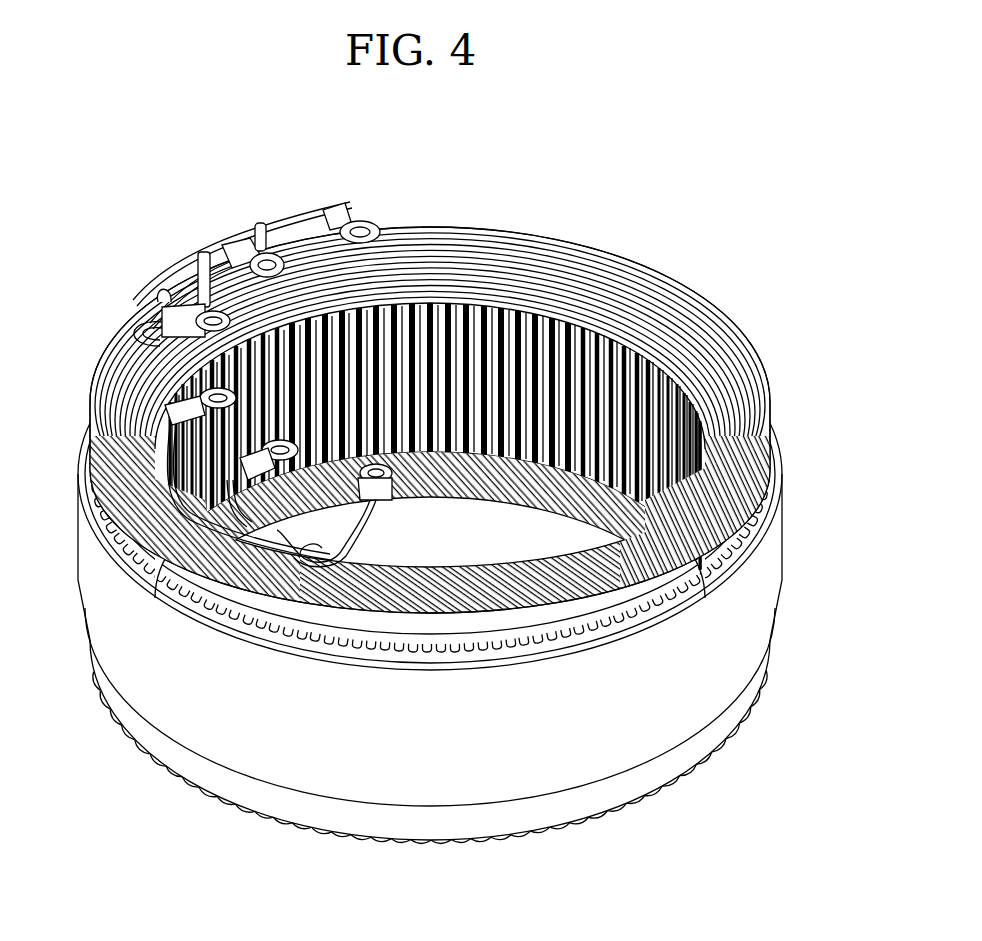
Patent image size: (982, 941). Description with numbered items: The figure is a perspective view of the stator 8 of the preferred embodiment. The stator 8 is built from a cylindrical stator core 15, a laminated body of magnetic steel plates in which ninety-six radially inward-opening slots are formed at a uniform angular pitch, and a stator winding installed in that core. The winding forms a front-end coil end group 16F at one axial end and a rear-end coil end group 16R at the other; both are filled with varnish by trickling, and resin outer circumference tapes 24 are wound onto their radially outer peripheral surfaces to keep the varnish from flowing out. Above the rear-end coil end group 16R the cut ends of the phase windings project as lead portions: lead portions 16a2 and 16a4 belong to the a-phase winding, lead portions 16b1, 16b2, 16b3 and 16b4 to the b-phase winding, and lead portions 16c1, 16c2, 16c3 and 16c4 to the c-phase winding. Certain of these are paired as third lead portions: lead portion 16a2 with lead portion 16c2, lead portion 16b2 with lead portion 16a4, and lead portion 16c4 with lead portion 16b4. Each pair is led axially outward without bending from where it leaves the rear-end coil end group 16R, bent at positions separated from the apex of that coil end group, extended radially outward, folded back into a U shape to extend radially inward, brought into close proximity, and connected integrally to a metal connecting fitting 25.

The stator 8 is at (110, 134).
The stator core 15 is at (770, 552).
The rear-end coil end group 16R is at (753, 367).
The front-end coil end group 16F is at (713, 747).
The resin outer circumference tape 24 is at (753, 458).
The metal connecting fitting 25 is at (365, 210).
The lead portion 16a2 is at (132, 343).
The lead portion 16a4 is at (220, 244).
The lead portion 16b1 is at (238, 242).
The lead portion 16b2 is at (198, 248).
The lead portion 16b3 is at (272, 242).
The lead portion 16b4 is at (337, 215).
The lead portion 16c1 is at (170, 300).
The lead portion 16c2 is at (138, 313).
The lead portion 16c3 is at (177, 274).
The lead portion 16c4 is at (312, 228).